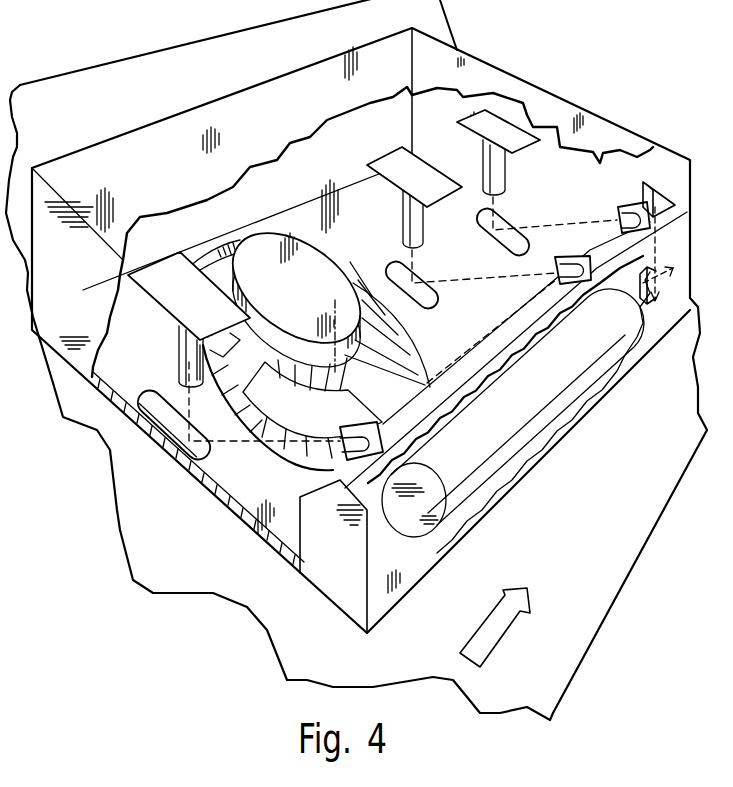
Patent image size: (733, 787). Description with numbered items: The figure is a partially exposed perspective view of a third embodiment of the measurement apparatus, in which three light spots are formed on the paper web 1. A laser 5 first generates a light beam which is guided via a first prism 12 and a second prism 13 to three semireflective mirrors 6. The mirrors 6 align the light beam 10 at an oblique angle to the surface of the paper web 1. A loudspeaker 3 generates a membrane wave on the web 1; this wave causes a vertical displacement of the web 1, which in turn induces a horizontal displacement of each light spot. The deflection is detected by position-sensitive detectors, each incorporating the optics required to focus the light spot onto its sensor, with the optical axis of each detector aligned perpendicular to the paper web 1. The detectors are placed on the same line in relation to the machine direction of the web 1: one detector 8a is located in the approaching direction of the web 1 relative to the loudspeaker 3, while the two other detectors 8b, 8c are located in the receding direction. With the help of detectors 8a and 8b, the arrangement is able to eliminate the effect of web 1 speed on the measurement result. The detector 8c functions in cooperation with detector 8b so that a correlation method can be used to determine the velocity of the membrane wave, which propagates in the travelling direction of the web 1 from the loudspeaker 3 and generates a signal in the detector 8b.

The web 1 is at (266, 628).
The loudspeaker 3 is at (306, 304).
The laser 5 is at (495, 431).
The semireflective mirrors 6 is at (347, 430).
The detector 8a is at (188, 355).
The detector 8b is at (415, 206).
The detector 8c is at (500, 156).
The light beam 10 is at (252, 447).
The first prism 12 is at (672, 292).
The second prism 13 is at (673, 203).